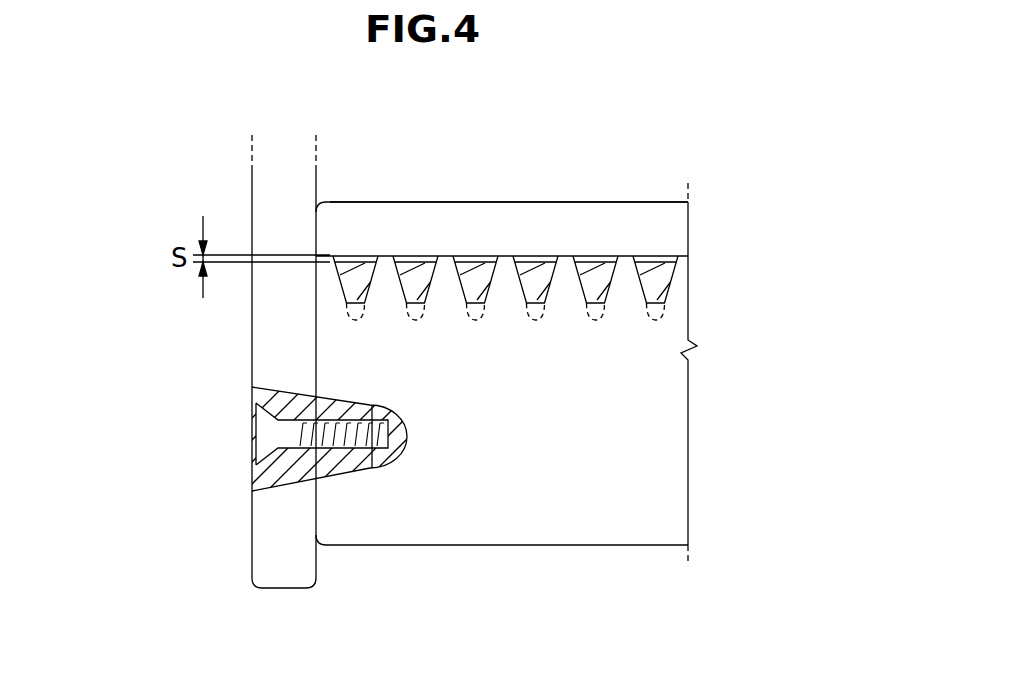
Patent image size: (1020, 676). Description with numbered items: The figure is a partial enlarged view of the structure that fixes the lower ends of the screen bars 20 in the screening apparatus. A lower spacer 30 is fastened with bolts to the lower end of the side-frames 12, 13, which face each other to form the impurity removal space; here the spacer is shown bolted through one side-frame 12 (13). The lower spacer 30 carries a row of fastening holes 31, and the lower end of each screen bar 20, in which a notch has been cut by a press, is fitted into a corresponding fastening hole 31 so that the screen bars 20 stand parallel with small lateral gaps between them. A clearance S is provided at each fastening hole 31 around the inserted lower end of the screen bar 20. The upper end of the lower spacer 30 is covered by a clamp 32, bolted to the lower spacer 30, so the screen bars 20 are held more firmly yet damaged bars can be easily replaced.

The side-frame 12 is at (193, 361).
The side-frame 13 is at (265, 523).
The screen bar 20 is at (662, 280).
The lower spacer 30 is at (504, 527).
The fastening hole 31 is at (654, 259).
The clamp 32 is at (508, 212).